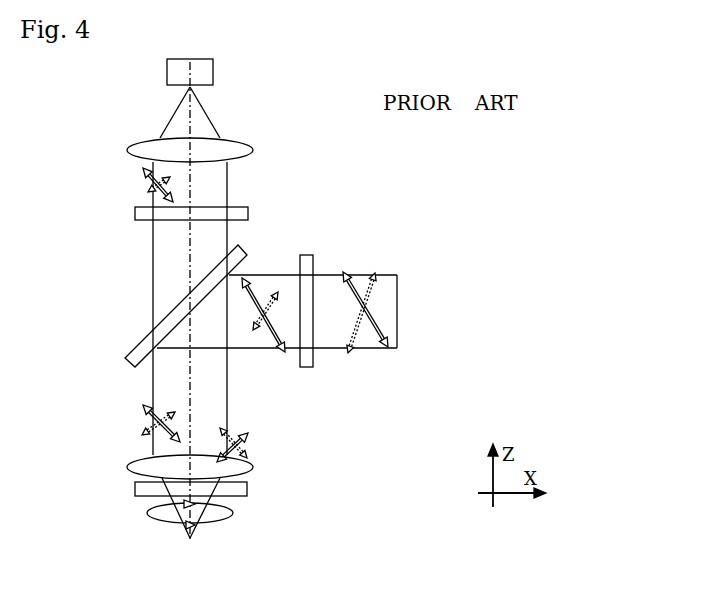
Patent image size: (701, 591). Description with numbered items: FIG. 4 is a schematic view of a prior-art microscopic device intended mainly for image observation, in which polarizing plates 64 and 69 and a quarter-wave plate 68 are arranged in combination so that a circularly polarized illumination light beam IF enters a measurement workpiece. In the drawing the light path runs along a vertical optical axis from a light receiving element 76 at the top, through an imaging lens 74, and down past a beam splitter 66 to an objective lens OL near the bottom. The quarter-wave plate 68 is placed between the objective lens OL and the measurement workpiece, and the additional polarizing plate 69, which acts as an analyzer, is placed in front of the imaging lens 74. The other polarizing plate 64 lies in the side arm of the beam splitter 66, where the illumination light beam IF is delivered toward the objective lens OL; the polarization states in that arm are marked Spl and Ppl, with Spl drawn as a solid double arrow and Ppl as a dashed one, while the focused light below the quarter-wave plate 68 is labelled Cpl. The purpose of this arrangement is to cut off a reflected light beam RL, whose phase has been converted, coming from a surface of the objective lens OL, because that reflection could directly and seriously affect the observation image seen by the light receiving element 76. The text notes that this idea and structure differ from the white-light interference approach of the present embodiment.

The light receiving element 76 is at (213, 75).
The imaging lens 74 is at (245, 155).
The polarizing plate 69 is at (248, 214).
The beam splitter 66 is at (162, 335).
The polarizing plate 64 is at (307, 357).
The quarter-wave plate 68 is at (243, 488).
The illumination light beam IF is at (242, 345).
The reflected light beam RL is at (255, 442).
The objective lens OL is at (253, 468).
The coupling / focal spot Cpl is at (205, 508).
The s-polarization Spl is at (355, 299).
The p-polarization Ppl is at (374, 302).